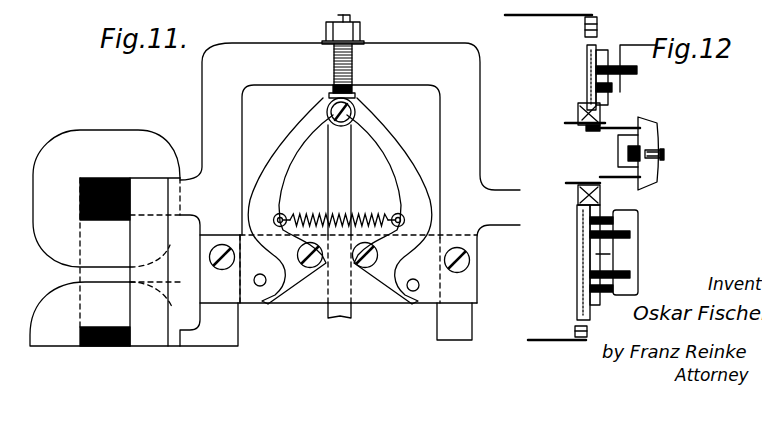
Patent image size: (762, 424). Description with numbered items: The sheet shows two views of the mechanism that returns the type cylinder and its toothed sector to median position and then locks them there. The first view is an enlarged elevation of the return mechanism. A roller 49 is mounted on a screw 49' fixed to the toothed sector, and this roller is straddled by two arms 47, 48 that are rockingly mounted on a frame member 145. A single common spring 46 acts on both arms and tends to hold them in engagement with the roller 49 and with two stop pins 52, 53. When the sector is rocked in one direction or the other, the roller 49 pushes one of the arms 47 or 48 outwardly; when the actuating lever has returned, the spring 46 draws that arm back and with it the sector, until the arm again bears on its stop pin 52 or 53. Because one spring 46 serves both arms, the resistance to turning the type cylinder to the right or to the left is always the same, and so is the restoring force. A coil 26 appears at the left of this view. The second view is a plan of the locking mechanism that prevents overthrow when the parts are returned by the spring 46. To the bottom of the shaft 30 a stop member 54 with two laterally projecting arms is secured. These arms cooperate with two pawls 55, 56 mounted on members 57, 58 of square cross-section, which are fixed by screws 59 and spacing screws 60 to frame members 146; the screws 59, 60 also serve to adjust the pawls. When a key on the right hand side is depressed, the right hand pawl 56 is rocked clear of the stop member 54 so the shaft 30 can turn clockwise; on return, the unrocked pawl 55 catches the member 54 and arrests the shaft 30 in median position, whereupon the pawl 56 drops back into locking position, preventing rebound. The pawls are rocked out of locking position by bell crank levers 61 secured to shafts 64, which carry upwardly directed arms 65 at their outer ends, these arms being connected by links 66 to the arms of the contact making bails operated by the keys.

In FIG. 11, the frame member 145 is at (468, 141).
In FIG. 11, the coil 26 is at (68, 284).
In FIG. 11, the shaft 30 is at (346, 161).
In FIG. 12, the shaft 30 is at (643, 153).
In FIG. 11, the roller 49 is at (364, 112).
In FIG. 11, the screw 49' is at (304, 104).
In FIG. 11, the arm 47 is at (277, 189).
In FIG. 11, the arm 48 is at (396, 157).
In FIG. 11, the spring 46 is at (362, 216).
In FIG. 11, the stop pin 52 is at (260, 274).
In FIG. 11, the stop pin 53 is at (417, 280).
In FIG. 12, the link 66 is at (555, 16).
In FIG. 12, the arm 65 is at (597, 22).
In FIG. 12, the member 58 is at (603, 57).
In FIG. 12, the shaft 64 is at (587, 79).
In FIG. 12, the screw 59 is at (630, 73).
In FIG. 12, the spacing screw 60 is at (611, 92).
In FIG. 12, the frame member 146 is at (622, 91).
In FIG. 12, the bell crank lever 61 is at (584, 126).
In FIG. 12, the pawl 55 is at (612, 130).
In FIG. 12, the stop member 54 is at (658, 128).
In FIG. 12, the pawl 56 is at (610, 176).
In FIG. 12, the member 57 is at (610, 254).